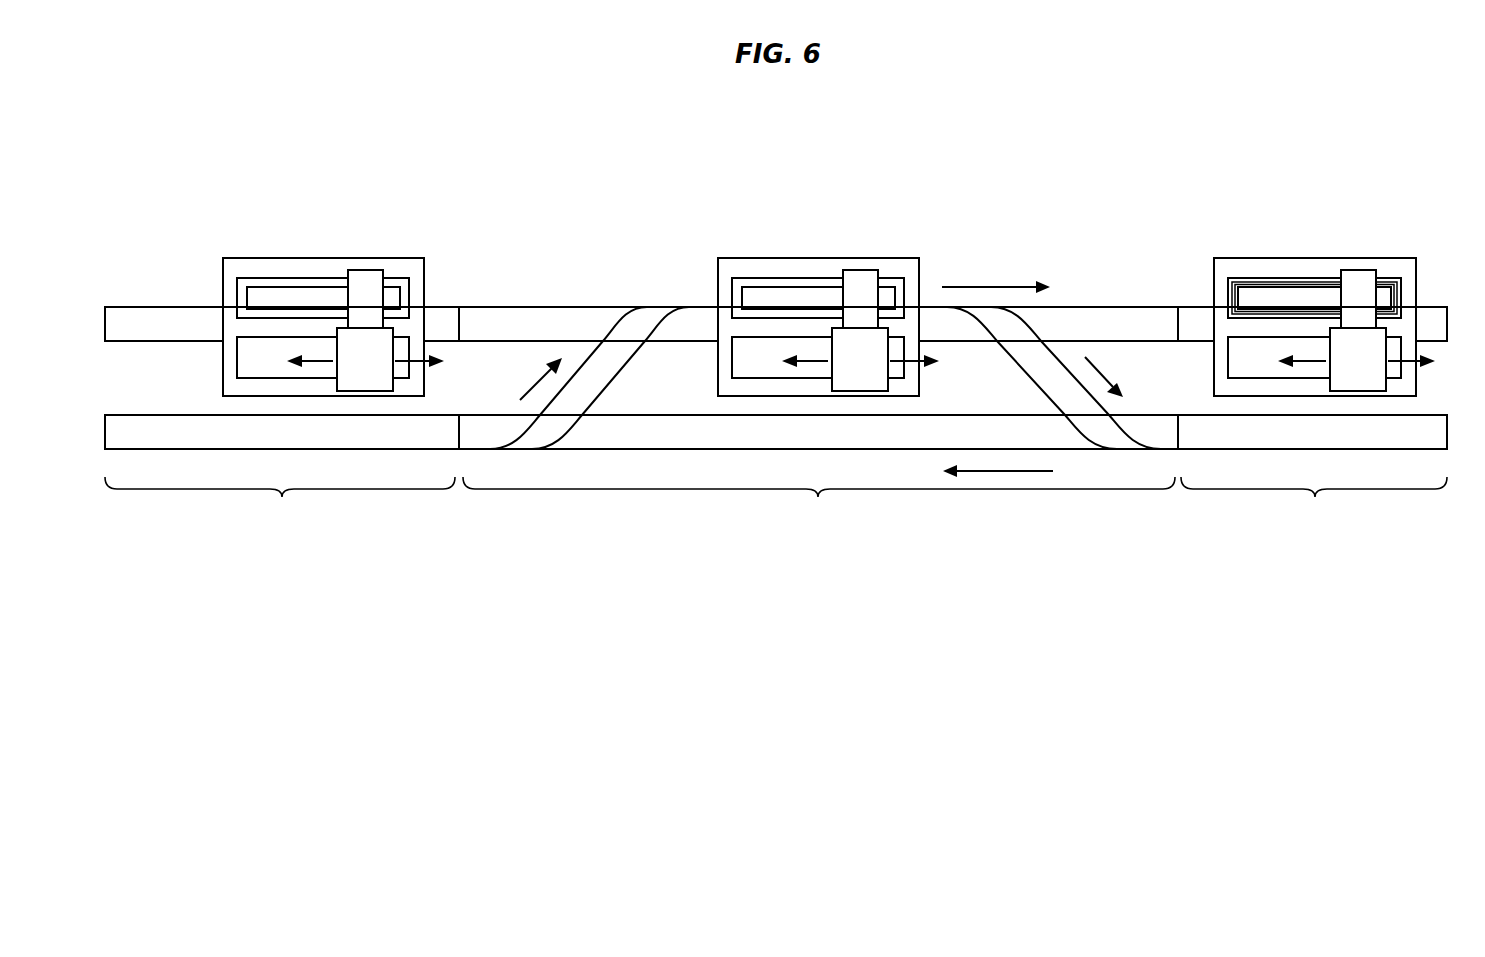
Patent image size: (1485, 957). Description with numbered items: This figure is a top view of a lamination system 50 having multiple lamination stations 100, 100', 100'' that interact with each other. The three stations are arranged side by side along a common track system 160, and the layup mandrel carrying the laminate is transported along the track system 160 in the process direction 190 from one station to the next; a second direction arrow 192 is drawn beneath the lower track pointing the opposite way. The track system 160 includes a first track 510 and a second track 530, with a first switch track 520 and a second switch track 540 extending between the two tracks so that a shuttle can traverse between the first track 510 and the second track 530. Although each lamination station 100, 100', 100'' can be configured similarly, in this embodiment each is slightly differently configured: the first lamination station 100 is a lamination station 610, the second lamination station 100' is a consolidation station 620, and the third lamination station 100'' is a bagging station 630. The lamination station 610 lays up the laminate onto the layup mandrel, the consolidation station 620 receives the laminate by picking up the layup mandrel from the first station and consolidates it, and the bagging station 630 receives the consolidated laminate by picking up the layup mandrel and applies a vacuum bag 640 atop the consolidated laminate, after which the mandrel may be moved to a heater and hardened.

The lamination system 50 is at (1210, 110).
The lamination station 100 is at (280, 528).
The second lamination station 100' is at (819, 528).
The third lamination station 100'' is at (1314, 528).
The track system 160 is at (122, 273).
The process direction 190 is at (1017, 284).
The second travel direction 192 is at (1003, 474).
The first track 510 is at (516, 315).
The first switch track 520 is at (1048, 378).
The second track 530 is at (623, 437).
The second switch track 540 is at (587, 382).
The lamination station 610 is at (349, 306).
The consolidation station 620 is at (842, 305).
The bagging station 630 is at (1315, 305).
The vacuum bag 640 is at (1250, 282).